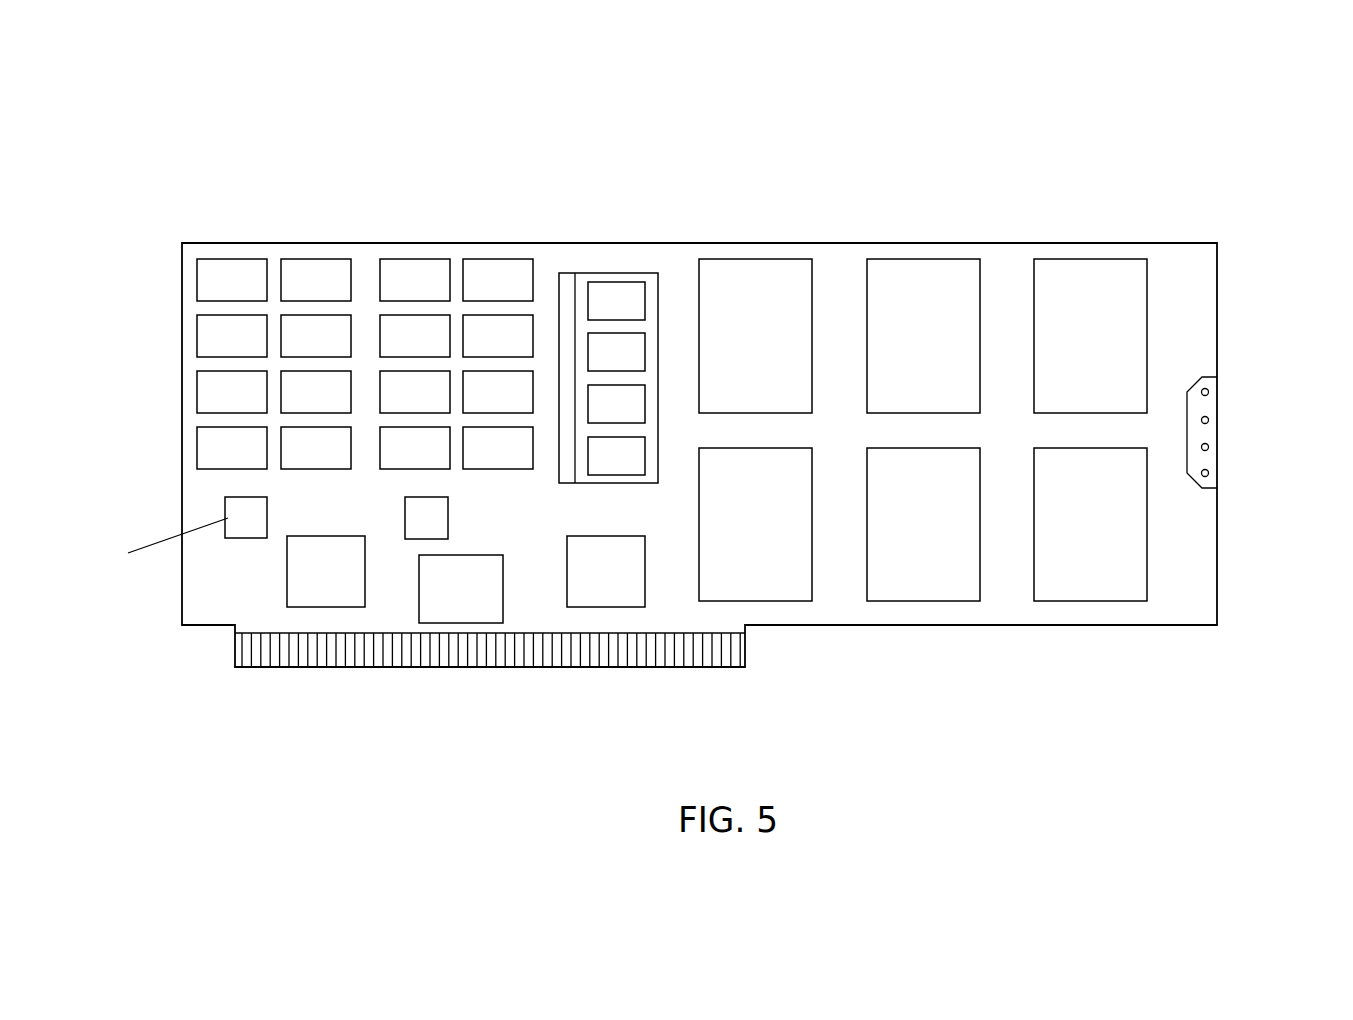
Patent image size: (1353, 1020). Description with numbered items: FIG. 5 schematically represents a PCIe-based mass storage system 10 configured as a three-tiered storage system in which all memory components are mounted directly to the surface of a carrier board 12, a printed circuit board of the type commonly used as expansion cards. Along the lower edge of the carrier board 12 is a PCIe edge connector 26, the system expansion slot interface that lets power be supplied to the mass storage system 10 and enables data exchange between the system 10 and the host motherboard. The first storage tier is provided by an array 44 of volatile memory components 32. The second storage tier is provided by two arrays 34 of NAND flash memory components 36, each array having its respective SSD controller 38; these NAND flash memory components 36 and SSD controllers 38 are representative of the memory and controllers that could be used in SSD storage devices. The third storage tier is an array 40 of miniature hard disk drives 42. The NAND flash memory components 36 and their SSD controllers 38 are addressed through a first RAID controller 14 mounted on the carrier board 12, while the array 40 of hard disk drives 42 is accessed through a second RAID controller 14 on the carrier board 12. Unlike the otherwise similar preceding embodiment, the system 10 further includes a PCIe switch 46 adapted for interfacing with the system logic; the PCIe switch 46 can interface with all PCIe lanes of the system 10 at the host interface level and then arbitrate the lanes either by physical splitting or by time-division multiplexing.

The mass storage system 10 is at (942, 152).
The carrier board 12 is at (972, 618).
The RAID controller 14 is at (617, 601).
The PCIe edge connector 26 is at (317, 658).
The volatile memory component 32 is at (623, 465).
The array of NAND flash memory components 34 is at (212, 233).
The NAND flash memory component 36 is at (514, 456).
The SSD controller 38 is at (440, 529).
The array of hard disk drives 40 is at (1186, 593).
The hard disk drive 42 is at (1103, 516).
The array of volatile memory components 44 is at (603, 275).
The PCIe switch 46 is at (445, 615).